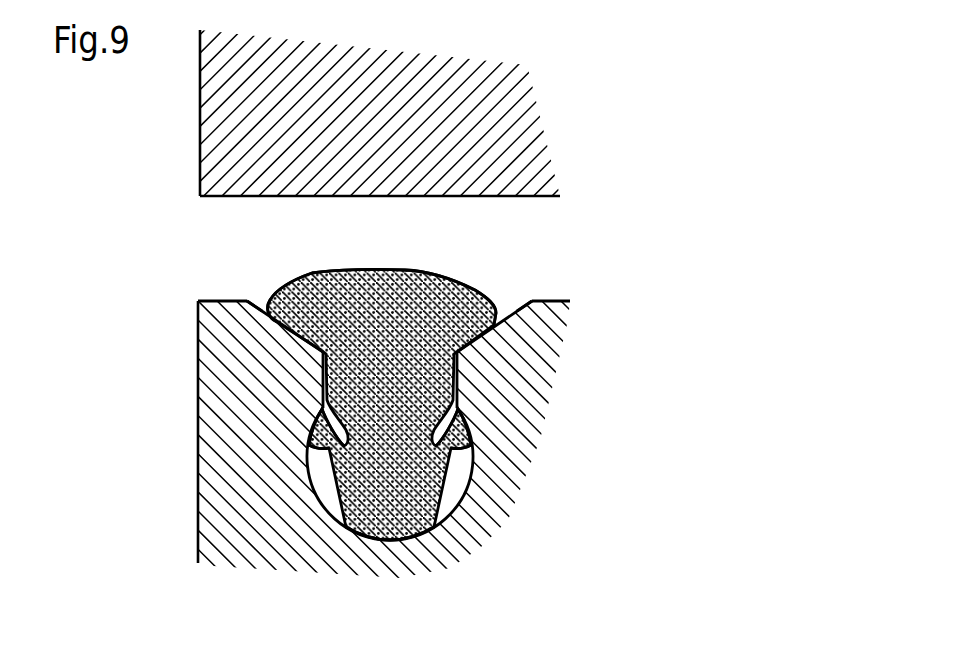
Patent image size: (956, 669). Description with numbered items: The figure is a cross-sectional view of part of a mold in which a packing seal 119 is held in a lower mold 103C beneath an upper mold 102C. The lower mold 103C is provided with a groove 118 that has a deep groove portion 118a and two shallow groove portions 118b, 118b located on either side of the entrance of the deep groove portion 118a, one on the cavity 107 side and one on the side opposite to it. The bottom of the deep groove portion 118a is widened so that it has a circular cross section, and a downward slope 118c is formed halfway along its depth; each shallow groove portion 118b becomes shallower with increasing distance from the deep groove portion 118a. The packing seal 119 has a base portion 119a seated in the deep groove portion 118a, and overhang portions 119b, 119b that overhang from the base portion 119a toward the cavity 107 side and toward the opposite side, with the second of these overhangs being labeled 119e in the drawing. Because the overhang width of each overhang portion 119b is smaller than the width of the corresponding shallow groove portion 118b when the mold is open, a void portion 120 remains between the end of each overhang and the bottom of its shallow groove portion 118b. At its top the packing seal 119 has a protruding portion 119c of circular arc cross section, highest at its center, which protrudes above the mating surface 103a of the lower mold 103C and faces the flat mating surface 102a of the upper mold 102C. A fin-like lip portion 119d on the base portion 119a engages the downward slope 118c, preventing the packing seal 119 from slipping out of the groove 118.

The upper mold 102C is at (533, 121).
The mating surface 102a is at (538, 197).
The cavity 107 is at (160, 238).
The lower mold 103C is at (540, 418).
The mating surface 103a is at (570, 301).
The groove 118 is at (398, 391).
The deep groove portion 118a is at (316, 496).
The shallow groove portion 118b is at (250, 304).
The downward slope 118c is at (459, 410).
The void portion 120 is at (258, 300).
The packing seal 119 is at (399, 269).
The base portion 119a is at (396, 543).
The overhang portion 119b is at (282, 318).
The protruding portion 119c is at (372, 270).
The lip portion 119d is at (470, 434).
The seal right shoulder portion 119e is at (505, 308).